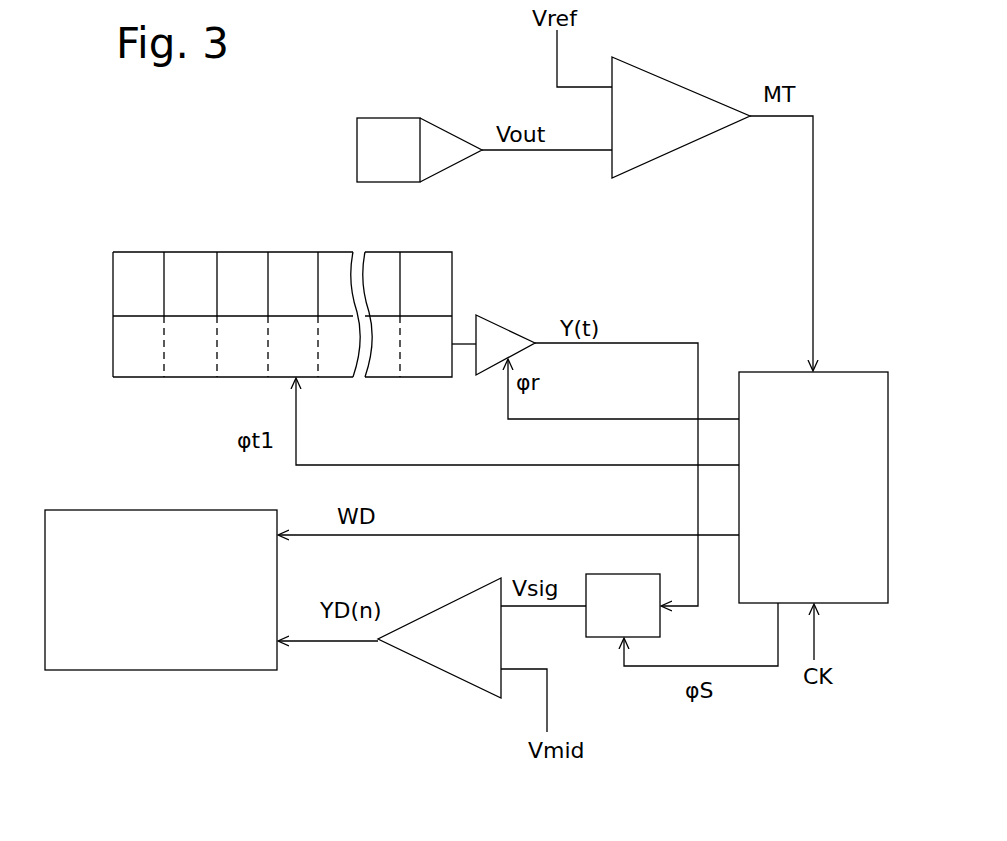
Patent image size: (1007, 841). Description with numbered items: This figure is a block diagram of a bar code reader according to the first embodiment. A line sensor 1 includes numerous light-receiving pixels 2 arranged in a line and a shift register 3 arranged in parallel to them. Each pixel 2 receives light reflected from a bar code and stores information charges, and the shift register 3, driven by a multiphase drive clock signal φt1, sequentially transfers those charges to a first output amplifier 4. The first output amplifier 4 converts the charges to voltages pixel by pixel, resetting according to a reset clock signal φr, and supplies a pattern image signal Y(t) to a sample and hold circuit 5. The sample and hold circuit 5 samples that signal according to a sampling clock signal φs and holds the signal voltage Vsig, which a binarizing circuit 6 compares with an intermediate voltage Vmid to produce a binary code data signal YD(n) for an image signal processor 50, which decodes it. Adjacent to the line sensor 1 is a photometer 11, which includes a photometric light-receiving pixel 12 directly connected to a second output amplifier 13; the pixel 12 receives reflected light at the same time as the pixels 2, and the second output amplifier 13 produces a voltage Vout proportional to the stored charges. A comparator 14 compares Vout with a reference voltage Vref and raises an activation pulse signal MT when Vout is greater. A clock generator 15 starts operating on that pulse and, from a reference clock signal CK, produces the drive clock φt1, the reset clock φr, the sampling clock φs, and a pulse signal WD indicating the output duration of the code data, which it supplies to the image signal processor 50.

The line sensor 1 is at (232, 398).
The light-receiving pixels 2 is at (137, 255).
The shift register 3 is at (388, 378).
The first output amplifier 4 is at (498, 325).
The sample and hold circuit 5 is at (620, 574).
The binarizing circuit 6 is at (425, 665).
The photometer 11 is at (402, 102).
The photometric light-receiving pixel 12 is at (357, 146).
The second output amplifier 13 is at (441, 126).
The comparator 14 is at (691, 90).
The clock generator 15 is at (859, 372).
The image signal processor 50 is at (97, 510).